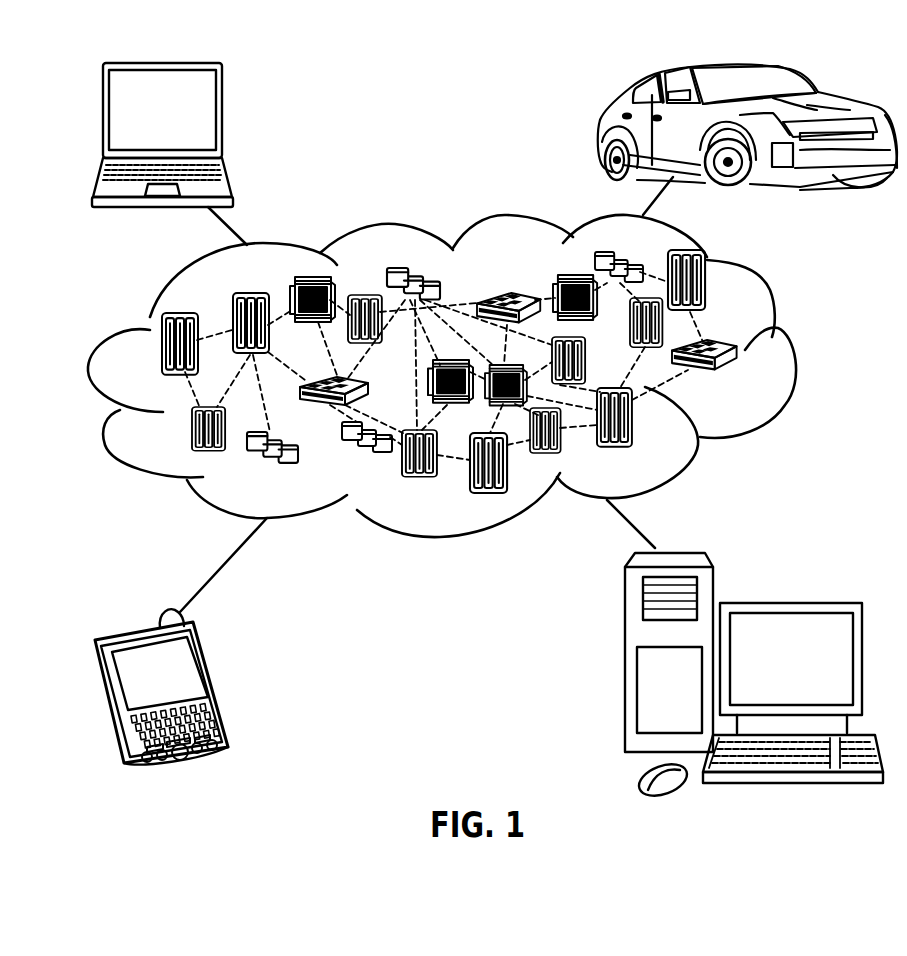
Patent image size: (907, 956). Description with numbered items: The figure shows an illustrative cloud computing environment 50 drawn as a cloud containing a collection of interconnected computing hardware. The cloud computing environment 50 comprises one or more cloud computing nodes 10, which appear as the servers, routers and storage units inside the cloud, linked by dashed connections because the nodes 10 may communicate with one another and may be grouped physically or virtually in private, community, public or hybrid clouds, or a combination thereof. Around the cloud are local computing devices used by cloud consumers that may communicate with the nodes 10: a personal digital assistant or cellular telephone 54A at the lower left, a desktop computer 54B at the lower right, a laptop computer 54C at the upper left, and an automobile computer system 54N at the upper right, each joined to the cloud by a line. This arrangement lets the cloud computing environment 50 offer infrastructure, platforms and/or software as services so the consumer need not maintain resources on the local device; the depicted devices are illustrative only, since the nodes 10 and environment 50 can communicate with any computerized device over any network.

The cloud computing nodes 10 is at (748, 381).
The cloud computing environment 50 is at (795, 353).
The personal digital assistant (PDA) or cellular telephone 54A is at (213, 687).
The desktop computer 54B is at (790, 603).
The laptop computer 54C is at (223, 117).
The automobile computer system 54N is at (600, 129).